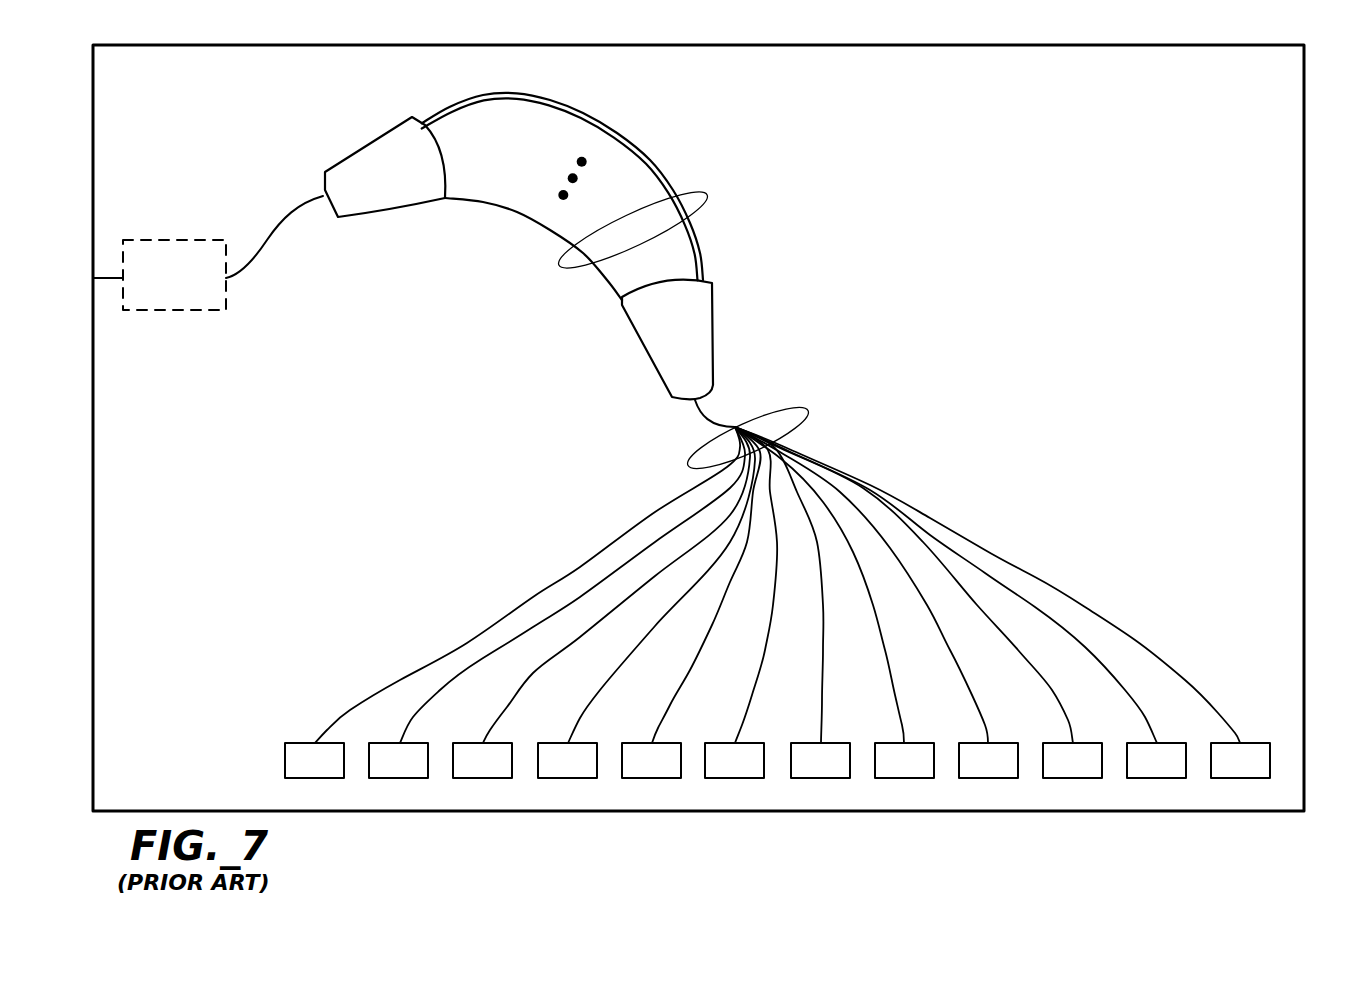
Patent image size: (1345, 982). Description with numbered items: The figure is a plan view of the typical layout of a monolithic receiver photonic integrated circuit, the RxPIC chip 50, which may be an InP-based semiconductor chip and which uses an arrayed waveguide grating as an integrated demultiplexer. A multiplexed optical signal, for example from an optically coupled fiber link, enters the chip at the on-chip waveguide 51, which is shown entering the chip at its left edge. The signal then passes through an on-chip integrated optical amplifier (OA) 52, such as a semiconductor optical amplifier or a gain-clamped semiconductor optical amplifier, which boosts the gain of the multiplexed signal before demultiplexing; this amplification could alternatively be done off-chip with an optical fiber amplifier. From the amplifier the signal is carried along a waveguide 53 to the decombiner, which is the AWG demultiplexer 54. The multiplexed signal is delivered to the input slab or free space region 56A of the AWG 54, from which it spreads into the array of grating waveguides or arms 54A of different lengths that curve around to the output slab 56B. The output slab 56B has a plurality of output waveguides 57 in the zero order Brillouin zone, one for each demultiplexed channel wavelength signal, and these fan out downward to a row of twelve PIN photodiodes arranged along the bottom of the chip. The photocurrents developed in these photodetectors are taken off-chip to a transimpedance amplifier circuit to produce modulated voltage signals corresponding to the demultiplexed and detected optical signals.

The RxPIC chip 50 is at (198, 79).
The on-chip waveguide 51 is at (103, 282).
The optical amplifier (OA) 52 is at (189, 238).
The waveguide 53 is at (266, 240).
The AWG demultiplexer 54 is at (632, 125).
The grating waveguides or arms 54A is at (713, 196).
The input slab or free space region 56A is at (377, 153).
The output slab 56B is at (652, 322).
The output waveguides 57 is at (808, 412).